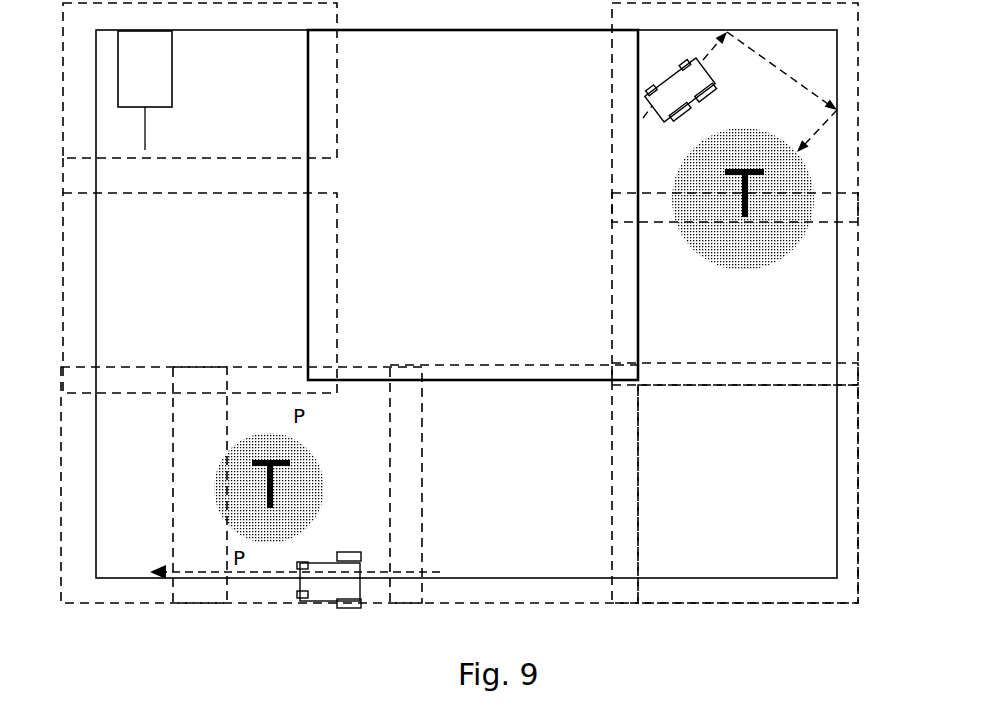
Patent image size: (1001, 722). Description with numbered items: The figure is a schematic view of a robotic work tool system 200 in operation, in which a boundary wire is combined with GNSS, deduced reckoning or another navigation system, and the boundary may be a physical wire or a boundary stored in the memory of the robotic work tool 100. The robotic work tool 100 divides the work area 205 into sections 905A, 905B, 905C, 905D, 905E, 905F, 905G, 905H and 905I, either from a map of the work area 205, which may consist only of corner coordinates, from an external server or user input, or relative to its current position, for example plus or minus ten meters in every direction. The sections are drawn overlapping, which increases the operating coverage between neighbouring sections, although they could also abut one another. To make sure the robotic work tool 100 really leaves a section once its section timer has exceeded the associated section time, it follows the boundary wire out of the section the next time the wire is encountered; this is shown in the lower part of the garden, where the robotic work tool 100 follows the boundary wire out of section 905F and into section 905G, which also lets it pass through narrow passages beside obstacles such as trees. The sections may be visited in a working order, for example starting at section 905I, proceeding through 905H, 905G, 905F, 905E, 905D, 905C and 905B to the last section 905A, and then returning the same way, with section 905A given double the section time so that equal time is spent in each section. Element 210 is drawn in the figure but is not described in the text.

The robotic work tool 100 is at (318, 577).
The robotic work tool system 200 is at (116, 309).
The work area 205 is at (704, 575).
The docking station 210 is at (123, 55).
The section 905A is at (858, 118).
The section 905B is at (857, 308).
The section 905C is at (857, 495).
The section 905D is at (758, 605).
The section 905E is at (556, 605).
The section 905F is at (373, 605).
The section 905G is at (85, 605).
The section 905H is at (63, 278).
The section 905I is at (210, 3).